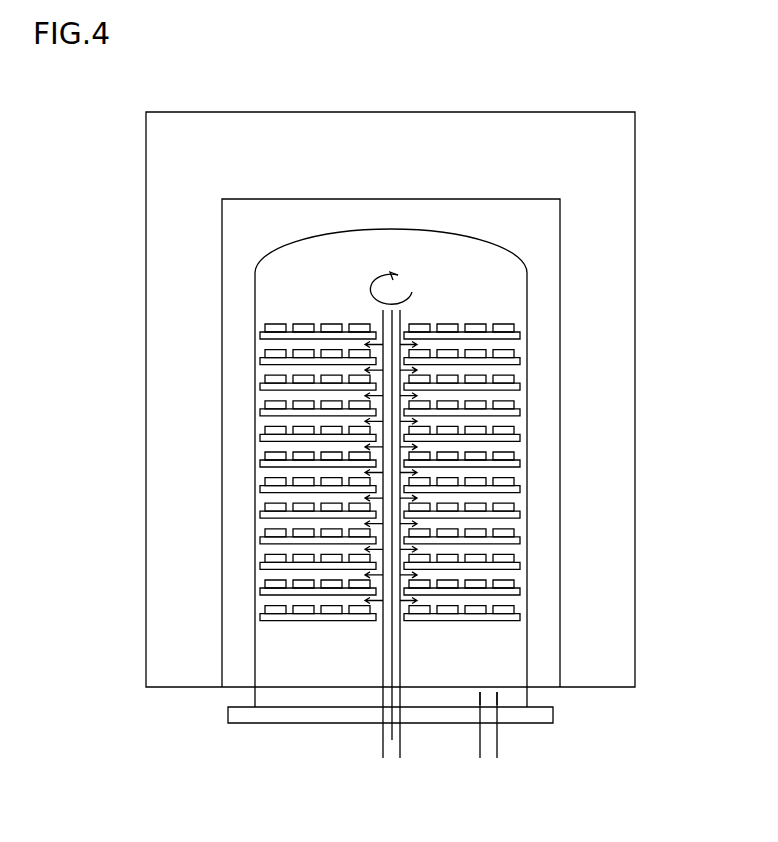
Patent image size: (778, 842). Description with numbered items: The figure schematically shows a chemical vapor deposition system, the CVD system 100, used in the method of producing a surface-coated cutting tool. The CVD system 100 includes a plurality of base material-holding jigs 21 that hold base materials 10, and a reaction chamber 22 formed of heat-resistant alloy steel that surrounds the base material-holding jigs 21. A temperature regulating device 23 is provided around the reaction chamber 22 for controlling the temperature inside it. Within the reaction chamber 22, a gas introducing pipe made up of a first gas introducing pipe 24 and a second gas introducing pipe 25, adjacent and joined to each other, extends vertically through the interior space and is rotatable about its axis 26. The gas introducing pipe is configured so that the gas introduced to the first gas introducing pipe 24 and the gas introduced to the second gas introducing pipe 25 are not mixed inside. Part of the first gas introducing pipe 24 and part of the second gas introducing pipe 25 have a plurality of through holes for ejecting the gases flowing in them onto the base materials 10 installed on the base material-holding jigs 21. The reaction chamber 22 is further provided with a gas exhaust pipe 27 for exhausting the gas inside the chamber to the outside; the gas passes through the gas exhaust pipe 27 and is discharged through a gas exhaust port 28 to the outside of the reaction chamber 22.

The CVD system 100 is at (672, 150).
The base material 10 is at (515, 325).
The base material-holding jig 21 is at (515, 360).
The reaction chamber 22 is at (530, 423).
The temperature regulating device 23 is at (570, 491).
The first gas introducing pipe 24 is at (382, 736).
The second gas introducing pipe 25 is at (392, 740).
The axis 26 is at (399, 274).
The gas exhaust pipe 27 is at (497, 701).
The gas exhaust port 28 is at (488, 740).